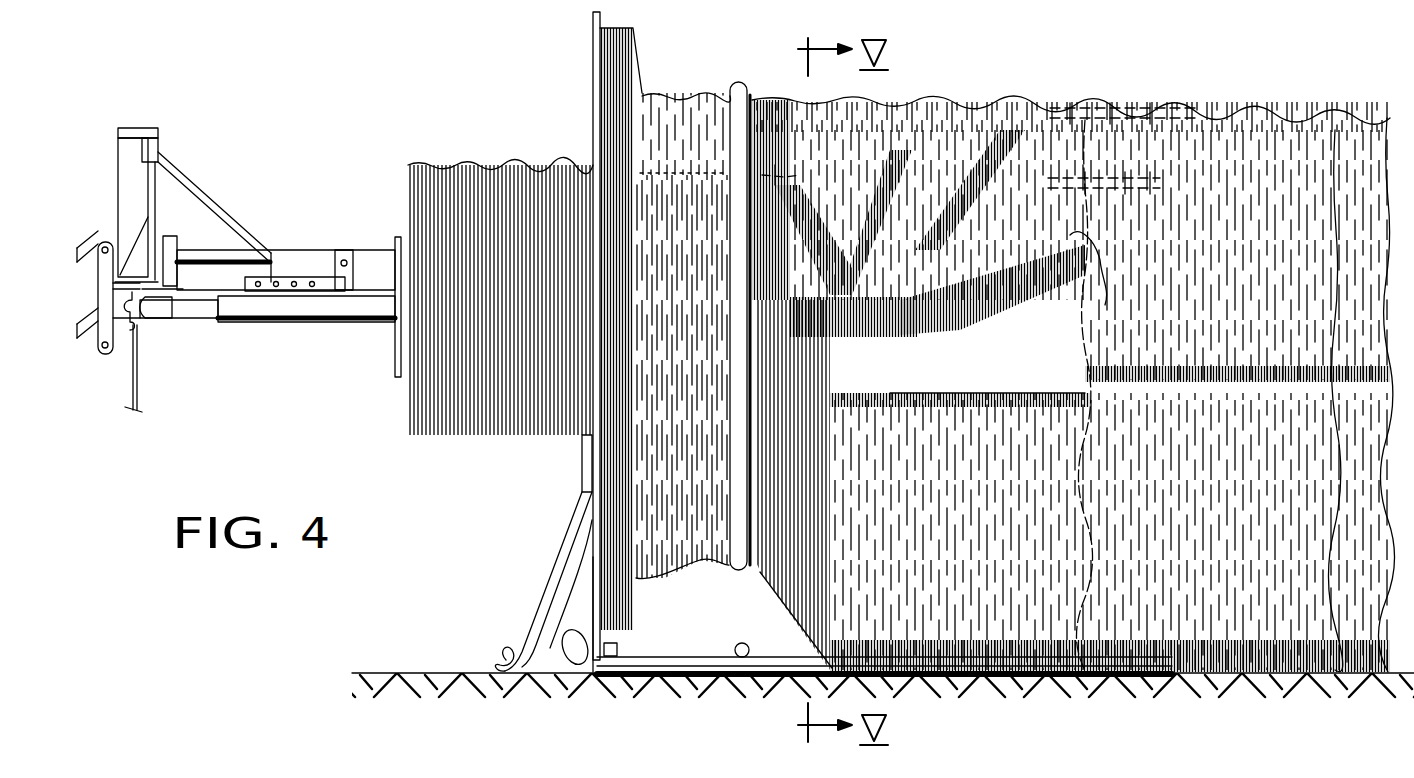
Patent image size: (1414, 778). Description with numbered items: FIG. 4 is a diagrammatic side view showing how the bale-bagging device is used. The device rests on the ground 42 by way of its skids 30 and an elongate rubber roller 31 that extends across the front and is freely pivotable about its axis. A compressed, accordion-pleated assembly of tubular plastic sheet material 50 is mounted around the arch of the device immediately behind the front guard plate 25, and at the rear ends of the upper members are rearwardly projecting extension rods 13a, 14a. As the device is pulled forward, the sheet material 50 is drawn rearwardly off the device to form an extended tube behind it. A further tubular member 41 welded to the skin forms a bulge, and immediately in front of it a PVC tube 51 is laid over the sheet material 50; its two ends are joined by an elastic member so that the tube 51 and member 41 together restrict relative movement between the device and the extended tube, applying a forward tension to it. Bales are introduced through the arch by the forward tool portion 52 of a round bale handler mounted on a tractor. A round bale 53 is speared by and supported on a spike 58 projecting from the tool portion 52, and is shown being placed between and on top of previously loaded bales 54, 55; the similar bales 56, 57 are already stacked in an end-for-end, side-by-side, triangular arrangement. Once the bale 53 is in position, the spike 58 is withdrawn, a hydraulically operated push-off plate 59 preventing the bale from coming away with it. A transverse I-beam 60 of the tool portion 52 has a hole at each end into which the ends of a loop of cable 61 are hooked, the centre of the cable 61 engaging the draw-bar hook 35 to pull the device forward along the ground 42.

The forward tool portion 52 is at (235, 160).
The round bale 53 is at (455, 165).
The front guard plate 25 is at (592, 63).
The tubular plastic sheet material 50 is at (695, 93).
The tube 51 is at (740, 80).
The tubular member 41 is at (818, 175).
The extension rod 14a is at (1105, 105).
The extension rod 13a is at (1095, 195).
The bale 56 is at (1088, 292).
The bale 54 is at (880, 410).
The bale 55 is at (987, 372).
The bale 57 is at (1105, 425).
The push-off plate 59 is at (395, 250).
The spike 58 is at (396, 345).
The transverse I-beam 60 is at (148, 342).
The cable 61 is at (145, 377).
The hook 35 is at (490, 648).
The rubber roller 31 is at (552, 678).
The skid member 30 is at (895, 680).
The ground 42 is at (420, 672).